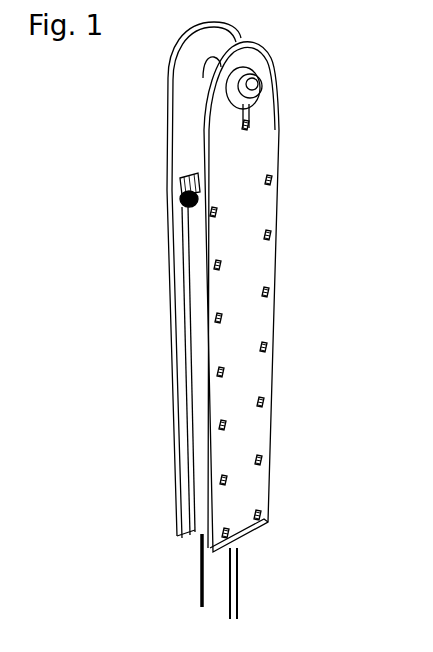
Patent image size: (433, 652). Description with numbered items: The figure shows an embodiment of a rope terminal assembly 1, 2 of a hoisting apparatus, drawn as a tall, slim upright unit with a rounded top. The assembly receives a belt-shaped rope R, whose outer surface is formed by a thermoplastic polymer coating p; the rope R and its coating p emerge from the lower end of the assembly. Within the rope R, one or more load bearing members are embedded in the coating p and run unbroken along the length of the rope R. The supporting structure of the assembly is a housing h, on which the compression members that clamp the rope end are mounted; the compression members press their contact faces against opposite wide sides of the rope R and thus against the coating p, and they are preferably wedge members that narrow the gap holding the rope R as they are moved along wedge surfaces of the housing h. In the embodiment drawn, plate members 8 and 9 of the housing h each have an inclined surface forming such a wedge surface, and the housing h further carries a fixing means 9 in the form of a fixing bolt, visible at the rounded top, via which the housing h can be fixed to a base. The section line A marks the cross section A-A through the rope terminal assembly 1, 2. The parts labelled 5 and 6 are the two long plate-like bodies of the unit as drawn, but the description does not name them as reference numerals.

The rope terminal assembly 1 is at (241, 317).
The rope terminal assembly 2 is at (241, 317).
The first leg part 5 is at (167, 173).
The second leg part 6 is at (255, 430).
The plate member 8 is at (198, 413).
The fixing means 9 is at (207, 74).
The housing h is at (278, 160).
The thermoplastic polymer coating p is at (212, 571).
The belt-shaped rope R is at (237, 590).
The cross section A- A is at (192, 307).